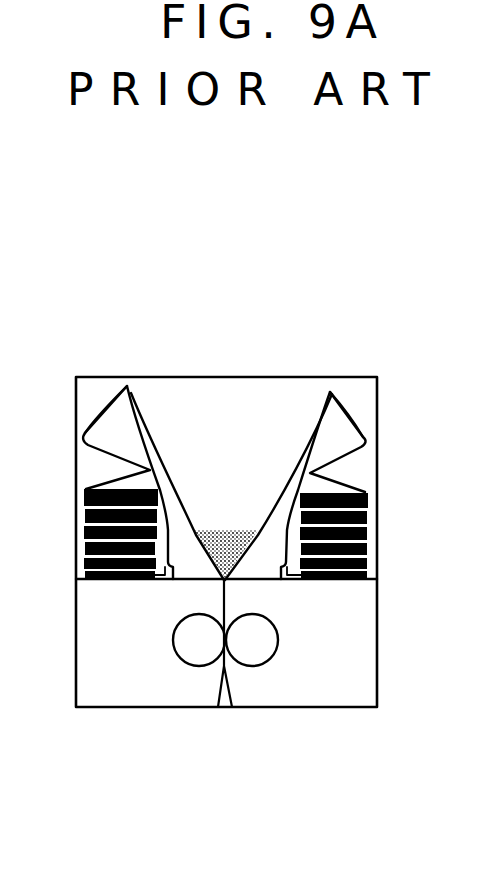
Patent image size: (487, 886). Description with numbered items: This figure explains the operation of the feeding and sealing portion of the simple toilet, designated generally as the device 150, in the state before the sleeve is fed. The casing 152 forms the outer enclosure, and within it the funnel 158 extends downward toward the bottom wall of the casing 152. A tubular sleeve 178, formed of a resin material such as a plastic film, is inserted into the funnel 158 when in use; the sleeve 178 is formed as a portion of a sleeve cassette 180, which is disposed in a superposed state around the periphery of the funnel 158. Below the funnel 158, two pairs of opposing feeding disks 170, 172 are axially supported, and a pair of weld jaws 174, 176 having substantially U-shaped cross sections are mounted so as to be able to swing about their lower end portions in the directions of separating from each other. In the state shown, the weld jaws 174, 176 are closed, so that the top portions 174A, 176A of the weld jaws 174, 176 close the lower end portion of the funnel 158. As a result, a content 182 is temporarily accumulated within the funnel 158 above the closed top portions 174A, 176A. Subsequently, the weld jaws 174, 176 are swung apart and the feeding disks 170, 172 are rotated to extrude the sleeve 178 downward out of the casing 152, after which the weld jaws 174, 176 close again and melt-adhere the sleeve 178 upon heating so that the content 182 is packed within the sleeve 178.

The prior art clamping device 150 is at (258, 343).
The casing 152 is at (378, 418).
The funnel 158 is at (343, 401).
The feeding disks 170 is at (270, 638).
The feeding disks 172 is at (198, 655).
The weld jaw 174 is at (213, 581).
The top portion of weld jaw 174A is at (187, 580).
The weld jaw 176 is at (232, 585).
The top portion of weld jaw 176A is at (231, 579).
The tubular sleeve 178 is at (150, 433).
The sleeve cassette 180 is at (368, 533).
The content 182 is at (230, 532).